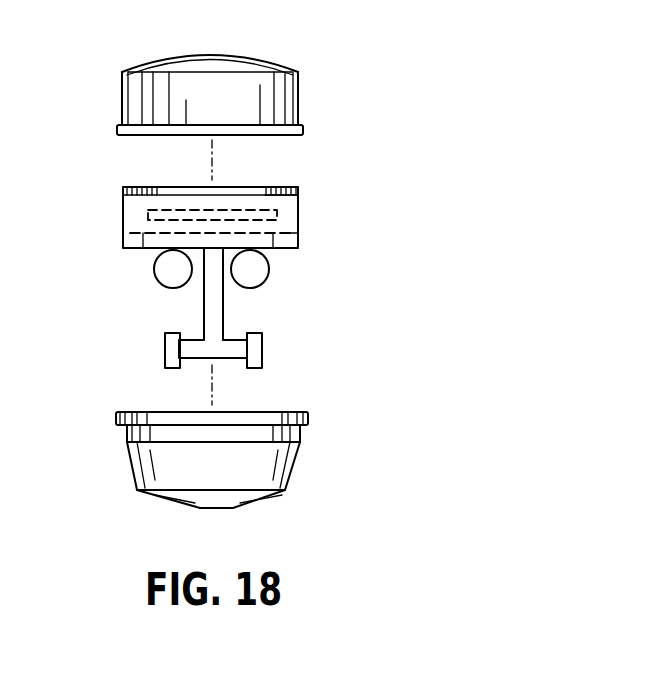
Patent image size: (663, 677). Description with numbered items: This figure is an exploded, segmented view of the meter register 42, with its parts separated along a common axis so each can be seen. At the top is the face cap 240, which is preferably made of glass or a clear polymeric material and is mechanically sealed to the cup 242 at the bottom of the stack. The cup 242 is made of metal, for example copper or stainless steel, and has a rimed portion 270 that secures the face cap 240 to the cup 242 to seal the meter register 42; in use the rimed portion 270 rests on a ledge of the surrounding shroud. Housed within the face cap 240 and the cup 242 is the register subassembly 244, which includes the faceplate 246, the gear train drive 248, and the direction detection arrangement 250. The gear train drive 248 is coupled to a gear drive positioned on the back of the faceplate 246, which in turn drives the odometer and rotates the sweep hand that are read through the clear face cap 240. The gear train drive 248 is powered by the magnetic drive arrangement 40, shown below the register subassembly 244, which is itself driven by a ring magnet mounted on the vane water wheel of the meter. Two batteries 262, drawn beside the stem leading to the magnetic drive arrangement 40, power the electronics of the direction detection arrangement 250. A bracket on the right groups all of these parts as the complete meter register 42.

The face cap 240 is at (263, 62).
The register subassembly 244 is at (108, 198).
The faceplate 246 is at (284, 187).
The gear train drive 248 is at (298, 241).
The direction detection arrangement 250 is at (146, 218).
The batteries 262 is at (162, 285).
The magnetic drive arrangement 40 is at (165, 356).
The rimed portion 270 is at (116, 418).
The cup 242 is at (173, 505).
The meter register 42 is at (341, 50).